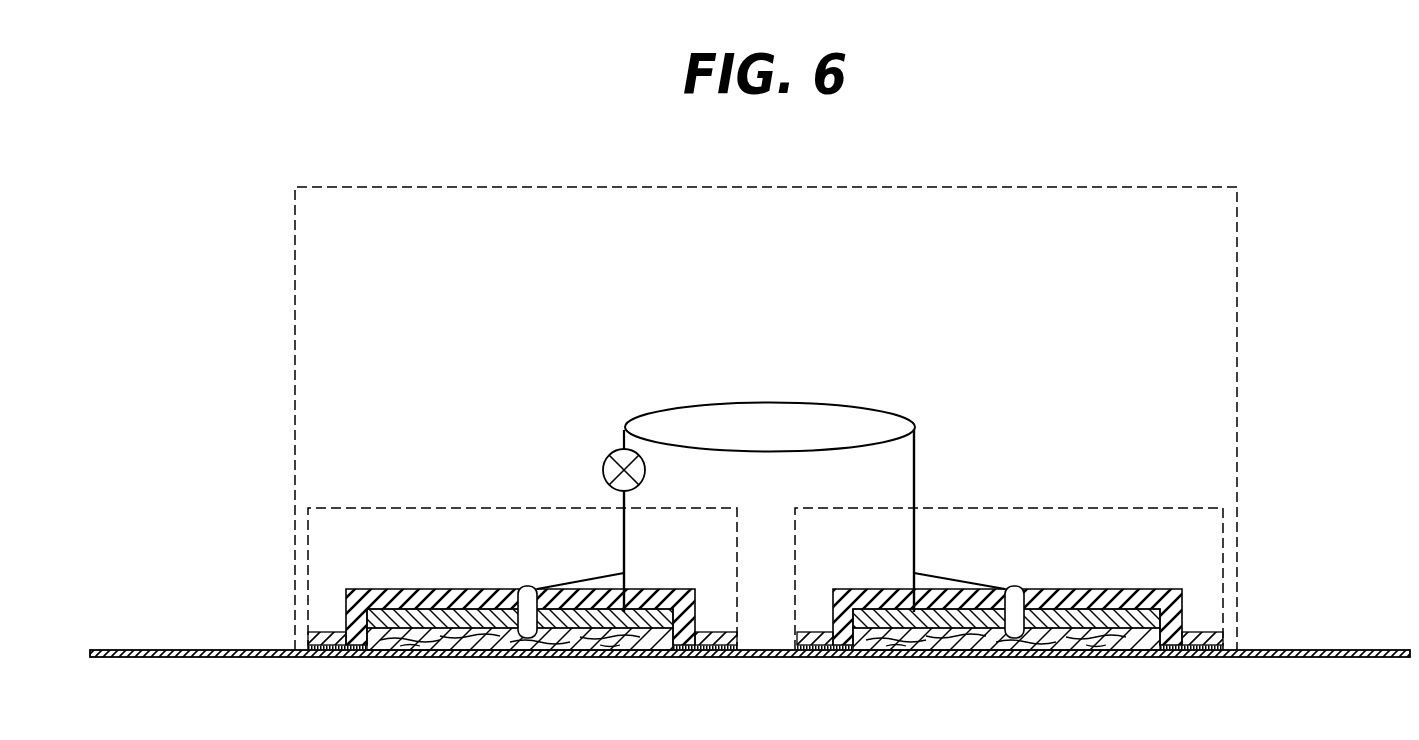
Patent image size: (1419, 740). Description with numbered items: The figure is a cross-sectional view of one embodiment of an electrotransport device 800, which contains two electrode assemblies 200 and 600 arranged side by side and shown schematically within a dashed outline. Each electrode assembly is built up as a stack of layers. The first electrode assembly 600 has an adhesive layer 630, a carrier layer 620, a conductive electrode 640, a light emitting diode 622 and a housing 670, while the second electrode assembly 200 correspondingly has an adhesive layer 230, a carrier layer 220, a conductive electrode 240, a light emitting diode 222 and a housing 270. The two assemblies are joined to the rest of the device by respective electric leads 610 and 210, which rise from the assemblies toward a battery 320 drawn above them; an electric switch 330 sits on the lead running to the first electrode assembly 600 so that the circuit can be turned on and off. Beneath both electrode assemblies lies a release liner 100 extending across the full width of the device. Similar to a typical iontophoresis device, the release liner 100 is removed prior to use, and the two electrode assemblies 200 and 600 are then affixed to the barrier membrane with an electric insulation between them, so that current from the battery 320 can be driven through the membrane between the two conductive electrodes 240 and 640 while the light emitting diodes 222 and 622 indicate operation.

The release liner 100 is at (773, 657).
The electrotransport device 800 is at (595, 178).
The electrode assembly 600 is at (490, 488).
The electric lead 610 is at (622, 541).
The carrier layer 620 is at (397, 650).
The light emitting diode 622 is at (527, 586).
The adhesive layer 630 is at (331, 652).
The conductive electrode 640 is at (367, 613).
The housing 670 is at (396, 589).
The electric switch 330 is at (605, 462).
The battery 320 is at (778, 413).
The electric lead 210 is at (915, 490).
The electrode assembly 200 is at (1105, 434).
The carrier layer 220 is at (1090, 650).
The light emitting diode 222 is at (1014, 586).
The adhesive layer 230 is at (1190, 652).
The conductive electrode 240 is at (1153, 612).
The housing 270 is at (1097, 590).